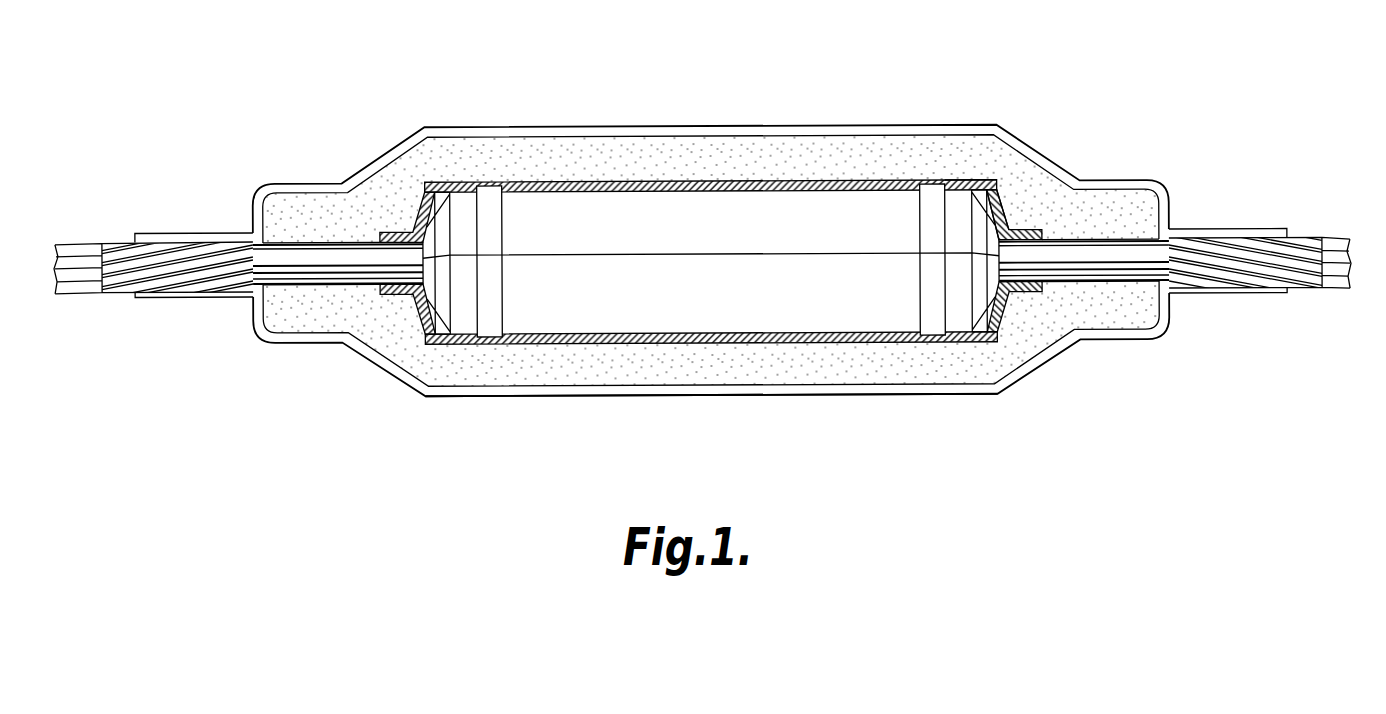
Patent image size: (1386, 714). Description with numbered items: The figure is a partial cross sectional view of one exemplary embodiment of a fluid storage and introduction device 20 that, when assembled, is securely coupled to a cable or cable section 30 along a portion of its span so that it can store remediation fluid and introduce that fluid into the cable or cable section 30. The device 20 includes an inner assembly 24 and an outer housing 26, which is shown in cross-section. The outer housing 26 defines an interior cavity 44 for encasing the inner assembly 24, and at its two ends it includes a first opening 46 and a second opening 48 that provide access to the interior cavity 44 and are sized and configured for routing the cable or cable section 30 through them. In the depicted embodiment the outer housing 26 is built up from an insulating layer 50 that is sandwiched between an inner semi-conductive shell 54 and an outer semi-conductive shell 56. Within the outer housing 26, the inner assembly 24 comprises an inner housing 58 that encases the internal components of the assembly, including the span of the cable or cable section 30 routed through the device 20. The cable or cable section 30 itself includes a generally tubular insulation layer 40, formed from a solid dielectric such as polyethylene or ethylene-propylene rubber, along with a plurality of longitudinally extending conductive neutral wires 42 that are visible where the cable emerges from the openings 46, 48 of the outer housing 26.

The fluid storage and introduction device 20 is at (272, 126).
The inner assembly 24 is at (985, 178).
The outer housing 26 is at (373, 138).
The cable or cable section 30 is at (1312, 225).
The insulation layer 40 is at (328, 280).
The conductive neutral wires 42 is at (113, 245).
The interior cavity 44 is at (990, 320).
The first opening 46 is at (183, 258).
The second opening 48 is at (1201, 241).
The insulating layer 50 is at (429, 367).
The inner semi-conductive shell 54 is at (537, 182).
The outer semi-conductive shell 56 is at (627, 398).
The inner housing 58 is at (705, 203).